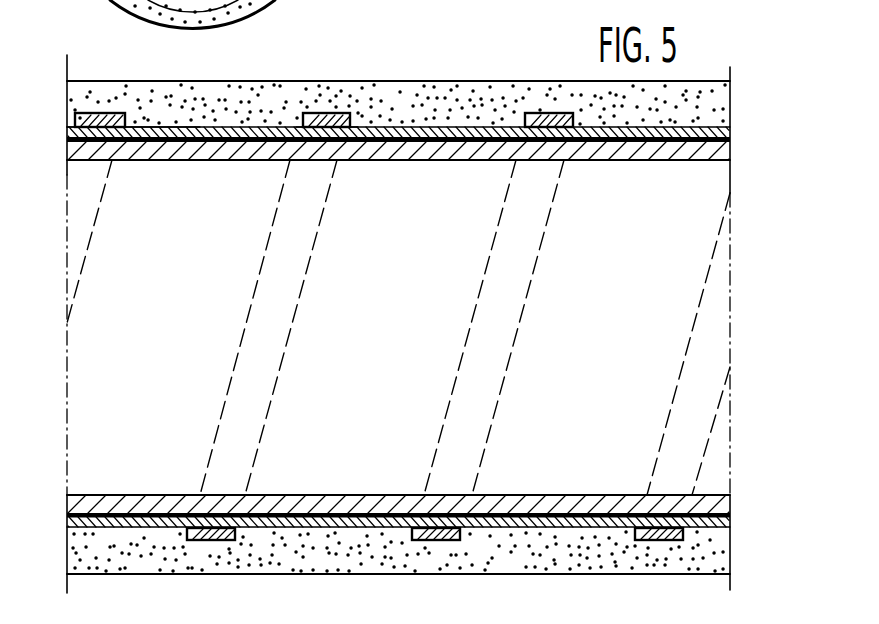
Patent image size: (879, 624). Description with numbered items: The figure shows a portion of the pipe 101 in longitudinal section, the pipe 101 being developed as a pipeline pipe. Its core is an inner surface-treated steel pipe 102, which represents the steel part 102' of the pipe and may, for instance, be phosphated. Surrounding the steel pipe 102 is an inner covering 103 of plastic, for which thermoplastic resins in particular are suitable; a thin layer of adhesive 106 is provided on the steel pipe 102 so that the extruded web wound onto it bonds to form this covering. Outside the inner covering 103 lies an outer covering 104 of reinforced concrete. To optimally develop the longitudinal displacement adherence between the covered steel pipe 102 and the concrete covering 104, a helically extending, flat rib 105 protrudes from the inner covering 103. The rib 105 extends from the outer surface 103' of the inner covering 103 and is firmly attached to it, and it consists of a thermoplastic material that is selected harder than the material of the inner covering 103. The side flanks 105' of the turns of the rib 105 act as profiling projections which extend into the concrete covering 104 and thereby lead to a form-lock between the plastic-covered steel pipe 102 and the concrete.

The pipe 101 is at (481, 77).
The steel pipe 102 is at (398, 559).
The upper substrate 102' is at (398, 92).
The inner covering 103 is at (398, 81).
The outer surface 103' is at (133, 76).
The outer covering 104 is at (507, 107).
The rib 105 is at (379, 324).
The side flanks 105' is at (321, 76).
The layer of adhesive 106 is at (599, 140).